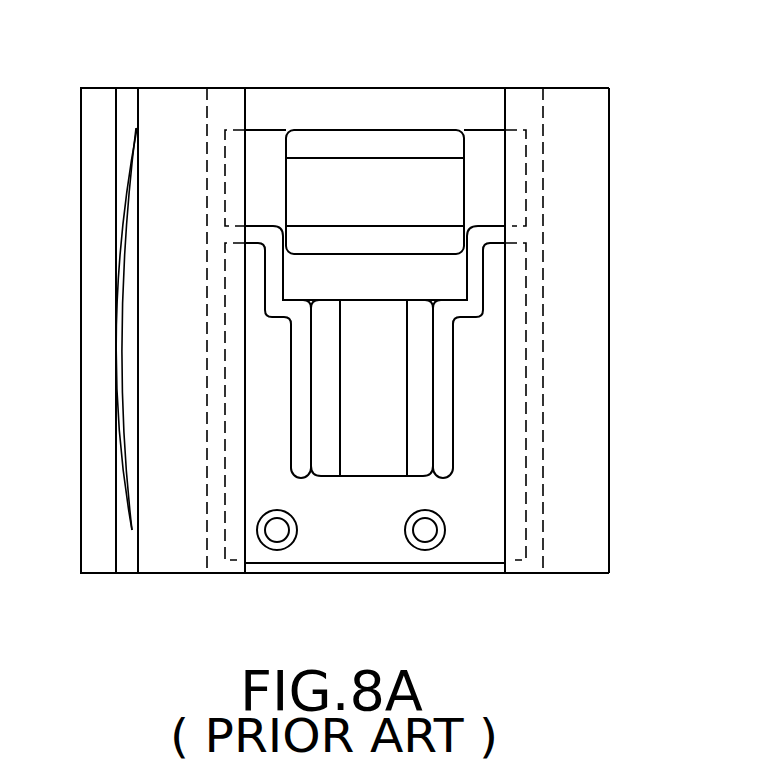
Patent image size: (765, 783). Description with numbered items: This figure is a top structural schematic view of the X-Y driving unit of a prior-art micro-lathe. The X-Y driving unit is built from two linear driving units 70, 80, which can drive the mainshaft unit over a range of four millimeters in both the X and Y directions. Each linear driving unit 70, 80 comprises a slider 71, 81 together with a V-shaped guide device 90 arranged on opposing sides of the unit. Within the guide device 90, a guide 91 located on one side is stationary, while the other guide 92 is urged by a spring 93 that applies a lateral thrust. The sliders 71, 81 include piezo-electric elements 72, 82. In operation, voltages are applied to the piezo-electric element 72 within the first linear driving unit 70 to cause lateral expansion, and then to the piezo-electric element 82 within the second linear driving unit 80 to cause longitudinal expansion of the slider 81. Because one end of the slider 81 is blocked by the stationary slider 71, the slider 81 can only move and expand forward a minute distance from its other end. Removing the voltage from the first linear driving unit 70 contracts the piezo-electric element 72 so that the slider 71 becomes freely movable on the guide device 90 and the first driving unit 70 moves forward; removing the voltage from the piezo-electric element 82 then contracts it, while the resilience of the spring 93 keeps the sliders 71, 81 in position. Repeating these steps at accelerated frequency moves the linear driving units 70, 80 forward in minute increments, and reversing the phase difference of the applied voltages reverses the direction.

The first linear driving unit 70 is at (480, 112).
The slider 71 is at (493, 147).
The piezo-electric element 72 is at (353, 167).
The second linear driving unit 80 is at (475, 576).
The slider 81 is at (263, 555).
The piezo-electric element 82 is at (352, 462).
The V-shaped guide device 90 is at (632, 239).
The guide 91 is at (588, 502).
The guide 92 is at (168, 547).
The spring 93 is at (122, 440).